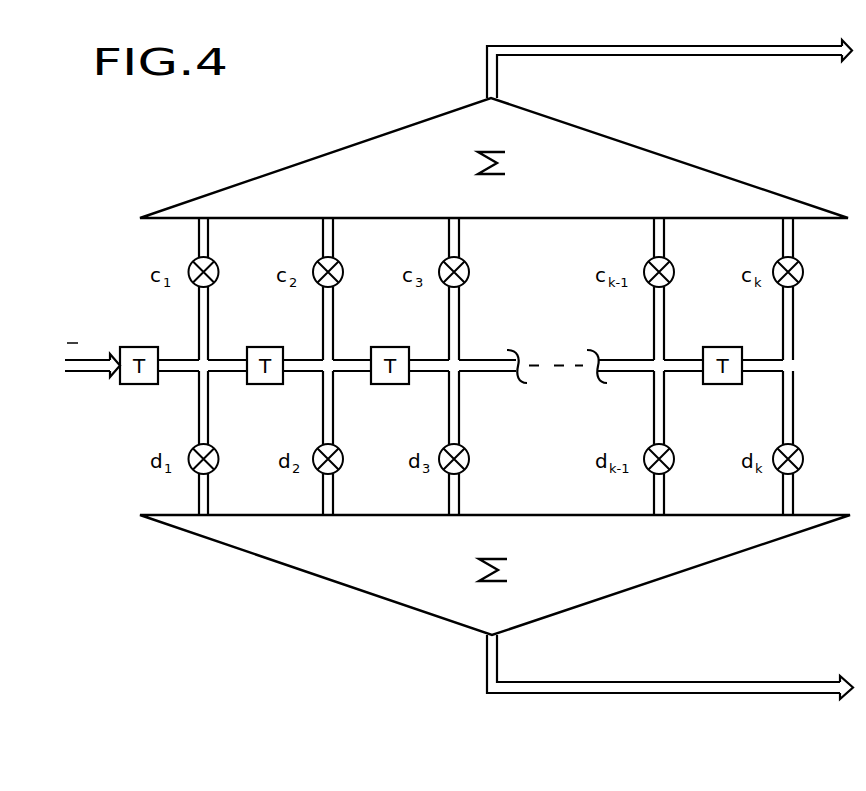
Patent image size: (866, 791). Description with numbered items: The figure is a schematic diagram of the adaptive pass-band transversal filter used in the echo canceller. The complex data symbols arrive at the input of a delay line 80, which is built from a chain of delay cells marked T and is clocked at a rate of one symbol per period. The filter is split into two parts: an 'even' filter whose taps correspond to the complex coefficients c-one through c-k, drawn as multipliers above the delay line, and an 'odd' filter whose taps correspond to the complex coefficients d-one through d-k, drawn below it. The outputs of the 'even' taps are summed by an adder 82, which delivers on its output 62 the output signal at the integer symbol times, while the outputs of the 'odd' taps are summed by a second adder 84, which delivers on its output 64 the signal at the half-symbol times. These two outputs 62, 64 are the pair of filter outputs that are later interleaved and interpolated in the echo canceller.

The output 62 is at (697, 56).
The output 64 is at (638, 682).
The delay line 80 is at (105, 373).
The adder 82 is at (357, 143).
The adder 84 is at (357, 592).